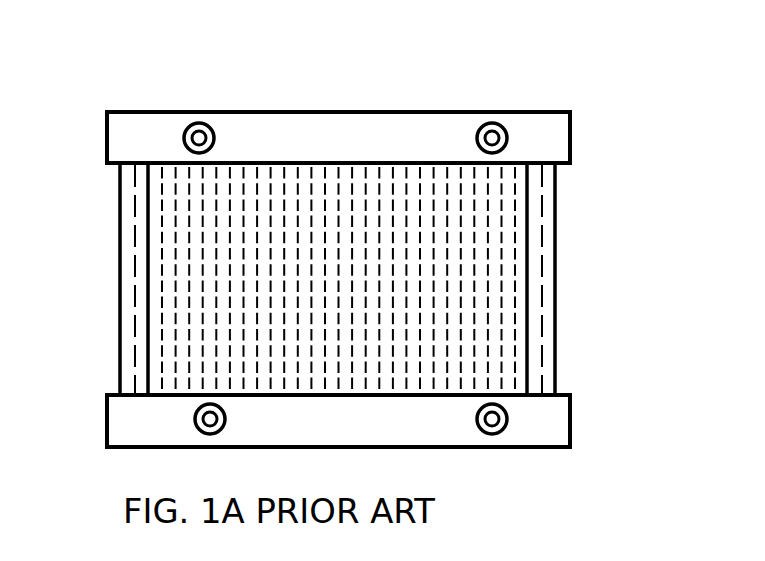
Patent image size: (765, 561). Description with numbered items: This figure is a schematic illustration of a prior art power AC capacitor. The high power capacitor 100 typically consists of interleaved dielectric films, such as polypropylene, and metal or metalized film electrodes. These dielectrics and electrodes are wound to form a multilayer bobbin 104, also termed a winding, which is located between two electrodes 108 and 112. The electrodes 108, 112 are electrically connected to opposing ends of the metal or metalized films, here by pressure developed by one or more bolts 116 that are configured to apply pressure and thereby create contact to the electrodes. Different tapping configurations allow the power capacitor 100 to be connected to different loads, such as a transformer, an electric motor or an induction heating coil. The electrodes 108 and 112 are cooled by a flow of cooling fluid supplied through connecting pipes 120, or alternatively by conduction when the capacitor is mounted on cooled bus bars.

The high power capacitor 100 is at (374, 100).
The multilayer bobbin 104 is at (380, 293).
The electrode 108 is at (529, 426).
The electrode 112 is at (135, 130).
The bolt 116 is at (555, 307).
The connecting pipe 120 is at (492, 138).